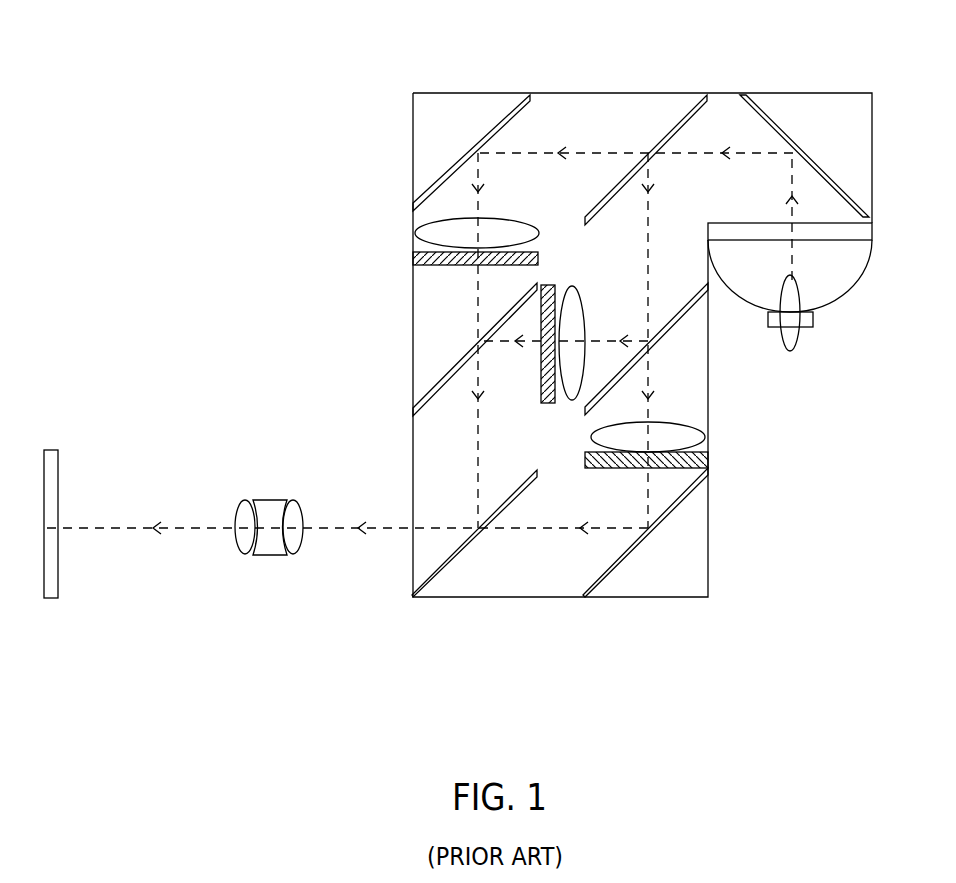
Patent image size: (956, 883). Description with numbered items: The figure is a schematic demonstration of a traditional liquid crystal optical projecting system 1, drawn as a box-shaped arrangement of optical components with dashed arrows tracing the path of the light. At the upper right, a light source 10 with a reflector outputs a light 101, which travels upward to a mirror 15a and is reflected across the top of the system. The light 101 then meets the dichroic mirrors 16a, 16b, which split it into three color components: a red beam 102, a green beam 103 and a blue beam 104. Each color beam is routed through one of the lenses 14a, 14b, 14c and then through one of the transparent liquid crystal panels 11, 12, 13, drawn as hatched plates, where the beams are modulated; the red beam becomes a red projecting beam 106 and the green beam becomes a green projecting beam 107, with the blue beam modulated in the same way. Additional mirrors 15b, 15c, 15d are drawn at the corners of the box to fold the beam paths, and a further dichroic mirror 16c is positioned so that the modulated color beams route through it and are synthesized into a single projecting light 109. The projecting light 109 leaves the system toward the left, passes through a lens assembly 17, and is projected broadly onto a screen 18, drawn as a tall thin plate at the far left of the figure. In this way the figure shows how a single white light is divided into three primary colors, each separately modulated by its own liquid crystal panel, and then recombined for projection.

The projection display apparatus (prior art) 1 is at (353, 150).
The light source 10 is at (788, 327).
The light 101 is at (793, 213).
The red beam 102 is at (597, 153).
The green beam 103 is at (612, 342).
The blue beam 104 is at (650, 375).
The red projecting beam 106 is at (475, 302).
The green projecting beam 107 is at (507, 342).
The projecting light 109 is at (328, 530).
The transparent liquid crystal panel 11 is at (415, 255).
The transparent liquid crystal panel 12 is at (541, 400).
The transparent liquid crystal panel 13 is at (697, 467).
The lens 14a is at (462, 232).
The lens 14b is at (570, 383).
The lens 14c is at (677, 438).
The mirror 15a is at (767, 120).
The reflecting mirror 15b is at (508, 113).
The reflecting mirror 15c is at (620, 563).
The reflecting mirror 15d is at (453, 560).
The dichroic mirror 16a is at (685, 117).
The dichroic mirror 16b is at (677, 325).
The dichroic mirror 16c is at (448, 363).
The projection lens 17 is at (268, 513).
The screen 18 is at (58, 475).